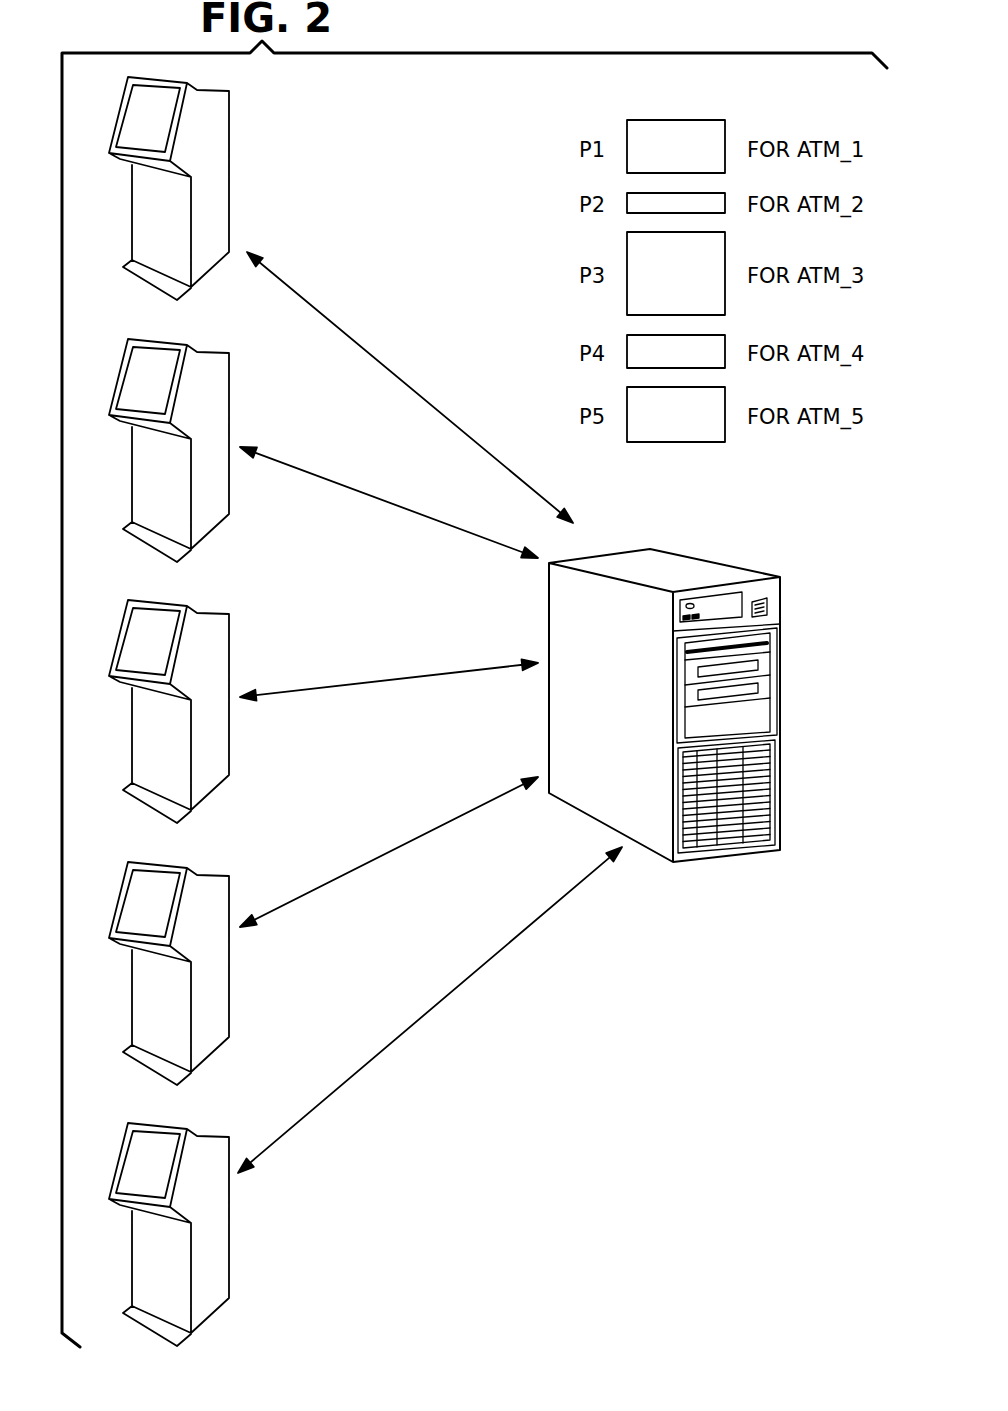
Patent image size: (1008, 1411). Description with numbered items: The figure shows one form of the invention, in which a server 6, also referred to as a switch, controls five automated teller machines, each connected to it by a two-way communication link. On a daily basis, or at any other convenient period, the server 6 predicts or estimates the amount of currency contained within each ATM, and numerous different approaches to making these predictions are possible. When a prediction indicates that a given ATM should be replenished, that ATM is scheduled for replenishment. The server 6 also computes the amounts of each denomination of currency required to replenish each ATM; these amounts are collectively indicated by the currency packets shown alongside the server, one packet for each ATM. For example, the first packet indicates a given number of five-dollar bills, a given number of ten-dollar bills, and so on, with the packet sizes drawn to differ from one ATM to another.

The server 6 is at (687, 570).